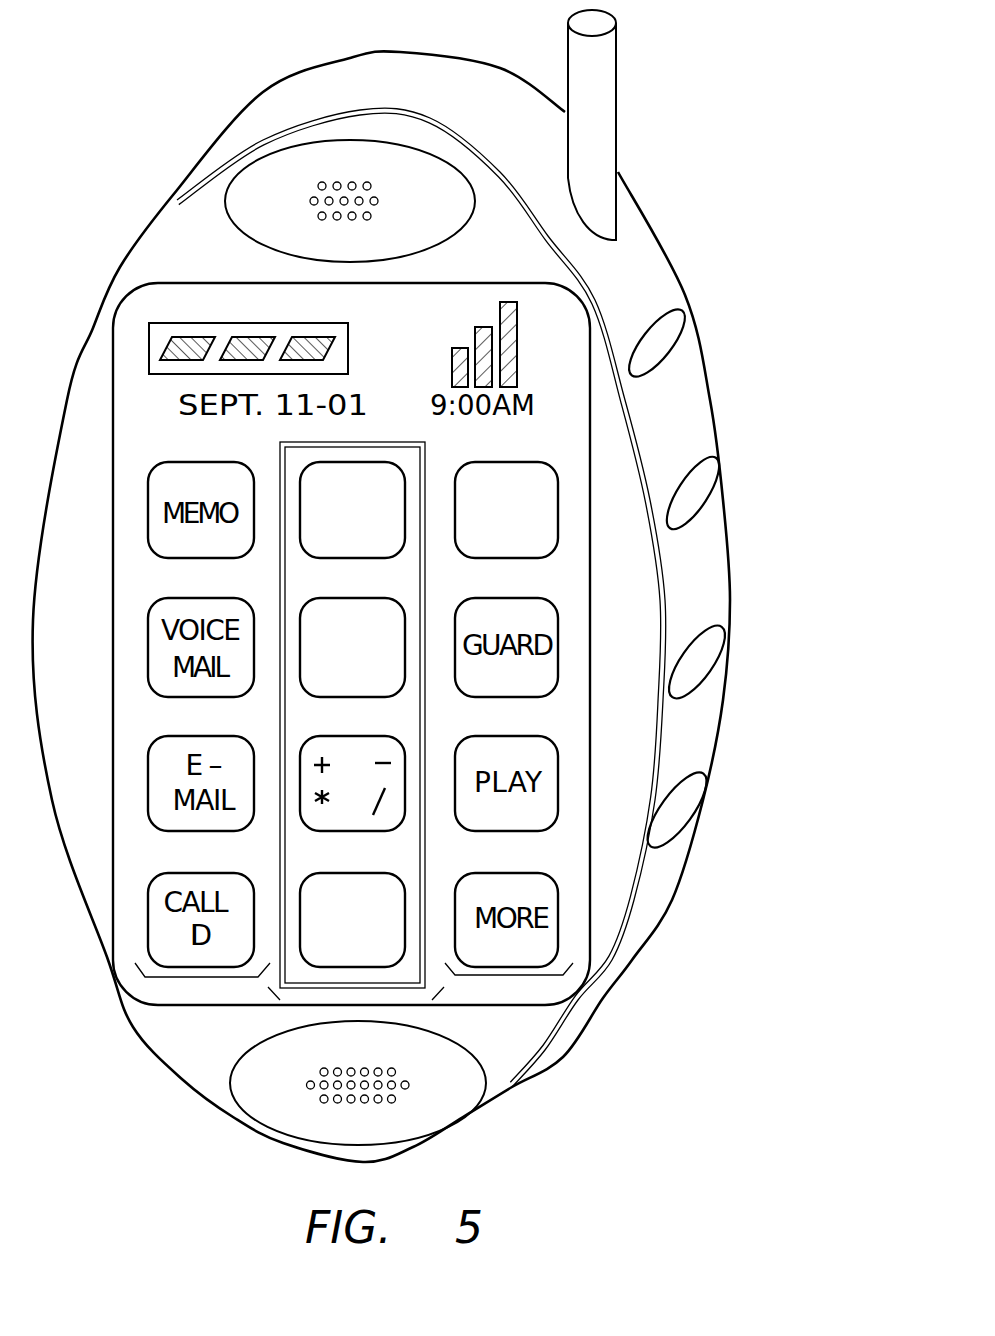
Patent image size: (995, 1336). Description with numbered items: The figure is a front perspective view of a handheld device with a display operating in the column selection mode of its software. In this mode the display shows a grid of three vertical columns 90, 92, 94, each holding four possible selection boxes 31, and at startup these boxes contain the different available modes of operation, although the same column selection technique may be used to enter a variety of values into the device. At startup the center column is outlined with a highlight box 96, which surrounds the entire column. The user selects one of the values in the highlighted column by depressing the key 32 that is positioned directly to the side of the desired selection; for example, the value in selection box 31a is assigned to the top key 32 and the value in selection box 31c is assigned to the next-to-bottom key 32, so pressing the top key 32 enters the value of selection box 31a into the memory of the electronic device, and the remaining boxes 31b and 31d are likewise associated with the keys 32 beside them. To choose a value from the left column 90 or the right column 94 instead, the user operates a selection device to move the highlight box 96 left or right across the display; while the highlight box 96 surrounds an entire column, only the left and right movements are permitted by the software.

The key 32 is at (680, 330).
The selection boxes 31 is at (540, 480).
The selection box 31a is at (305, 485).
The selection box 31b is at (312, 612).
The selection box 31c is at (327, 750).
The selection box 31d is at (327, 882).
The highlight box 96 is at (423, 463).
The column 90 is at (203, 975).
The column 92 is at (352, 1003).
The column 94 is at (510, 975).